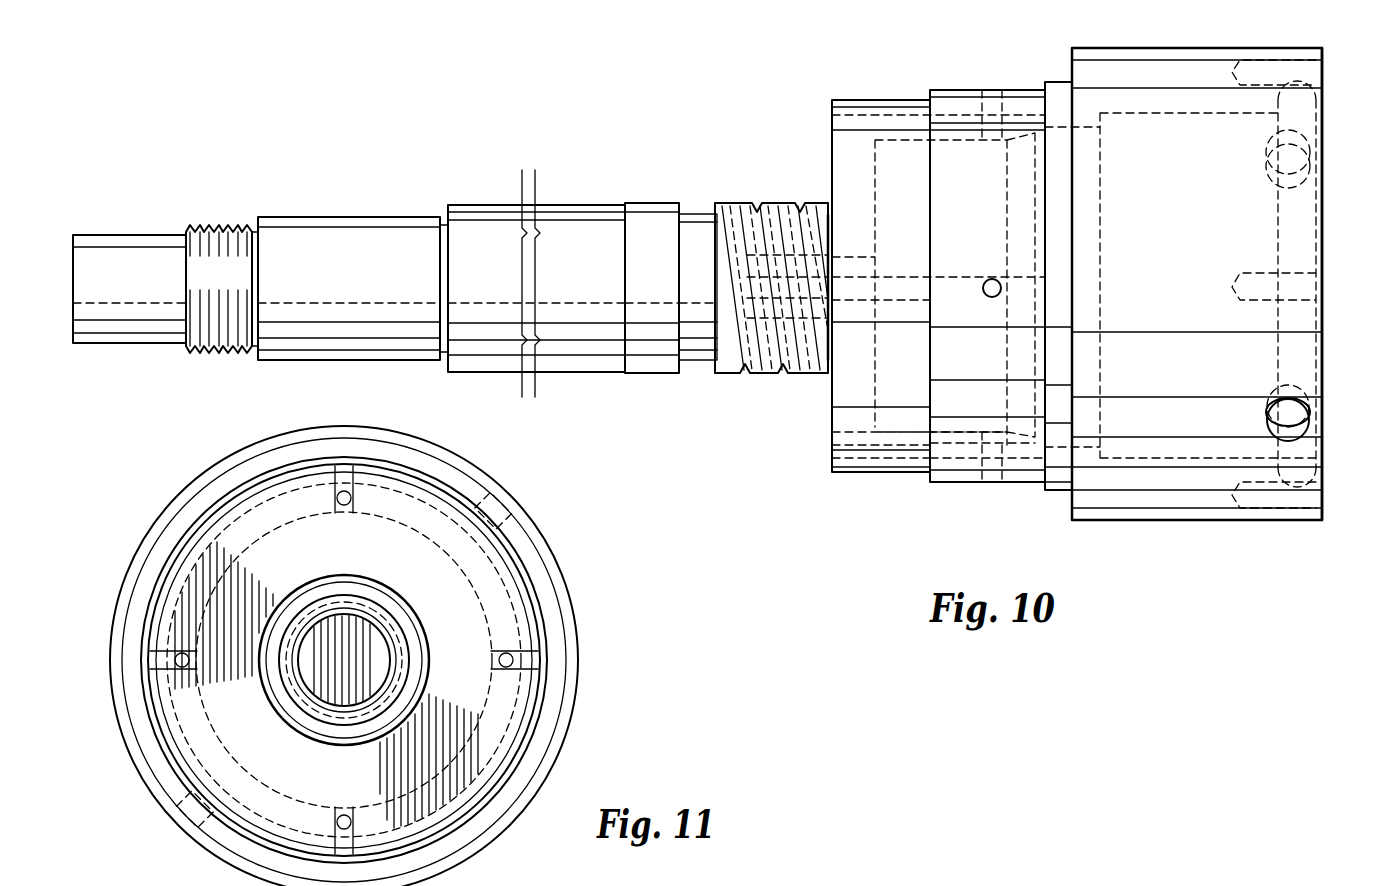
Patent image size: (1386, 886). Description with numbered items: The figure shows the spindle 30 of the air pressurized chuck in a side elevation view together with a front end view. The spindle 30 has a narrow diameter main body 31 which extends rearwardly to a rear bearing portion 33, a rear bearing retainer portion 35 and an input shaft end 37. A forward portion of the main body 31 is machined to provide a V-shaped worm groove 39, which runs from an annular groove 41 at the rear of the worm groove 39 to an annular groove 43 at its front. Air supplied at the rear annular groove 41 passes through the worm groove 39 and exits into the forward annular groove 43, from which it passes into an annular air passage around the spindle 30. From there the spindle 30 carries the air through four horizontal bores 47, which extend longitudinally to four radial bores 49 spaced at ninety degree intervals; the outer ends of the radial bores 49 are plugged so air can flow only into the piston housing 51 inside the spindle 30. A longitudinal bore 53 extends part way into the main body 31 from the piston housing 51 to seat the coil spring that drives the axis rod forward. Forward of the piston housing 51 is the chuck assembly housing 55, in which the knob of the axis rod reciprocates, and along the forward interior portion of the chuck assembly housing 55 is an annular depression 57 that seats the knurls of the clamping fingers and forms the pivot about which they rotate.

In FIG. 10, the spindle 30 is at (636, 150).
In FIG. 11, the spindle 30 is at (572, 577).
In FIG. 10, the main body 31 is at (491, 228).
In FIG. 10, the rear bearing portion 33 is at (340, 238).
In FIG. 10, the rear bearing retainer portion 35 is at (232, 228).
In FIG. 10, the input shaft end 37 is at (138, 262).
In FIG. 10, the V-shaped worm groove 39 is at (775, 378).
In FIG. 10, the annular groove 41 is at (705, 212).
In FIG. 10, the annular groove 43 is at (830, 218).
In FIG. 10, the horizontal bores 47 is at (872, 118).
In FIG. 10, the radial bores 49 is at (1002, 105).
In FIG. 10, the piston housing 51 is at (952, 405).
In FIG. 10, the longitudinal bore 53 is at (848, 322).
In FIG. 10, the chuck assembly housing 55 is at (1170, 375).
In FIG. 10, the annular depression 57 is at (1305, 340).